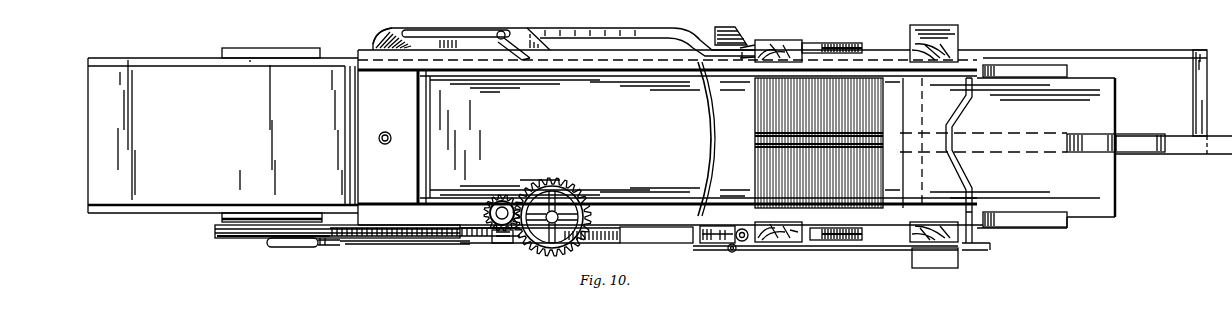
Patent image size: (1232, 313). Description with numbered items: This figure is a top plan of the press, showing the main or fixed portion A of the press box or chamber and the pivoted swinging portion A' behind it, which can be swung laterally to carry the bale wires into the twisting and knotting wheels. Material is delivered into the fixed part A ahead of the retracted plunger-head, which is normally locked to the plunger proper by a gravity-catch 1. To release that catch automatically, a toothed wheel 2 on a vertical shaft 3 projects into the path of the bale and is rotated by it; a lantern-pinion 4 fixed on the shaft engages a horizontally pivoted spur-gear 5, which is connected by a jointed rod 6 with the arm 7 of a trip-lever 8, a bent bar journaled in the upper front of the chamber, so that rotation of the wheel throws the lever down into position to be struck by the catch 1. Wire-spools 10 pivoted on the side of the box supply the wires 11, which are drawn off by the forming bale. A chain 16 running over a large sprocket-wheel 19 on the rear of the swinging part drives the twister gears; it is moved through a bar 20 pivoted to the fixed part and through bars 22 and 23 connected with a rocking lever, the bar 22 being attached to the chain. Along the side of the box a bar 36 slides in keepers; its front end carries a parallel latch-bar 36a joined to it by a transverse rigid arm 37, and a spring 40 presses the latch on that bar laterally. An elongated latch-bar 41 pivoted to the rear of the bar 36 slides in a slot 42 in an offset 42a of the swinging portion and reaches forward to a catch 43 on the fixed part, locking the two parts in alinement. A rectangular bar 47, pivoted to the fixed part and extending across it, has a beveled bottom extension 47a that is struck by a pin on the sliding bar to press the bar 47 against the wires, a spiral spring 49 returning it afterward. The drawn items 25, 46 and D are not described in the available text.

The gravity-catch 1 is at (1122, 145).
The toothed wheel 2 is at (504, 195).
The vertical shaft 3 is at (488, 228).
The lantern-pinion 4 is at (502, 240).
The spur-gear 5 is at (580, 192).
The jointed rod 6 is at (892, 250).
The arm of trip-lever 7 is at (982, 247).
The trip-lever 8 is at (962, 118).
The wire-spools 10 is at (848, 43).
The wires 11 is at (806, 45).
The chain 16 is at (396, 240).
The sprocket-wheel 19 is at (254, 236).
The bar 20 is at (278, 244).
The bar 22 is at (336, 243).
The bar 23 is at (424, 243).
The guide rail 25 is at (520, 244).
The sliding bar 36 is at (557, 32).
The latch-bar 36a is at (1180, 148).
The transverse rigid arm 37 is at (1197, 80).
The spring 40 is at (1148, 2).
The elongated latch-bar 41 is at (602, 60).
The slot 42 is at (455, 32).
The offset 42a is at (393, 30).
The catch 43 is at (758, 48).
The member 46 is at (1090, 9).
The rectangular bar 47 is at (734, 110).
The bottom extension 47a is at (720, 30).
The spiral spring 49 is at (901, 32).
The fixed portion of press-box A is at (633, 104).
The swinging portion of press-box A' is at (411, 125).
The shaft D is at (1030, 134).